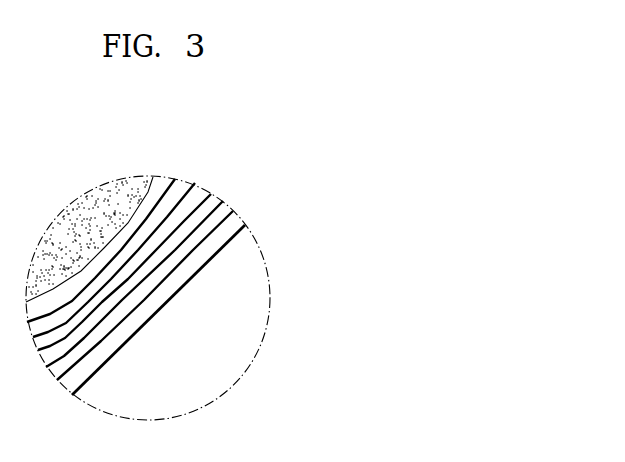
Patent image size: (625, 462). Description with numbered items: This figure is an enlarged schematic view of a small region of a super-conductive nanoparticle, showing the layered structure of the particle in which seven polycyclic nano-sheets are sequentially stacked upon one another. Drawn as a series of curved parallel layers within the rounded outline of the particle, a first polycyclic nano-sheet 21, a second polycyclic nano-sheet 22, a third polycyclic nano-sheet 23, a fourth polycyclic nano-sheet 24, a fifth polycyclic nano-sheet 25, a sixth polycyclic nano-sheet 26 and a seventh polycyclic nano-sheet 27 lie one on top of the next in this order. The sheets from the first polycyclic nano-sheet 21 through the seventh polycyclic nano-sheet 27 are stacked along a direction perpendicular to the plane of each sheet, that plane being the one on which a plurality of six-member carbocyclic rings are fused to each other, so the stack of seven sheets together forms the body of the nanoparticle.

The first polycyclic nano-sheet 21 is at (245, 225).
The second polycyclic nano-sheet 22 is at (233, 211).
The third polycyclic nano-sheet 23 is at (223, 201).
The fourth polycyclic nano-sheet 24 is at (211, 194).
The fifth polycyclic nano-sheet 25 is at (195, 183).
The sixth polycyclic nano-sheet 26 is at (174, 179).
The seventh polycyclic nano-sheet 27 is at (153, 177).